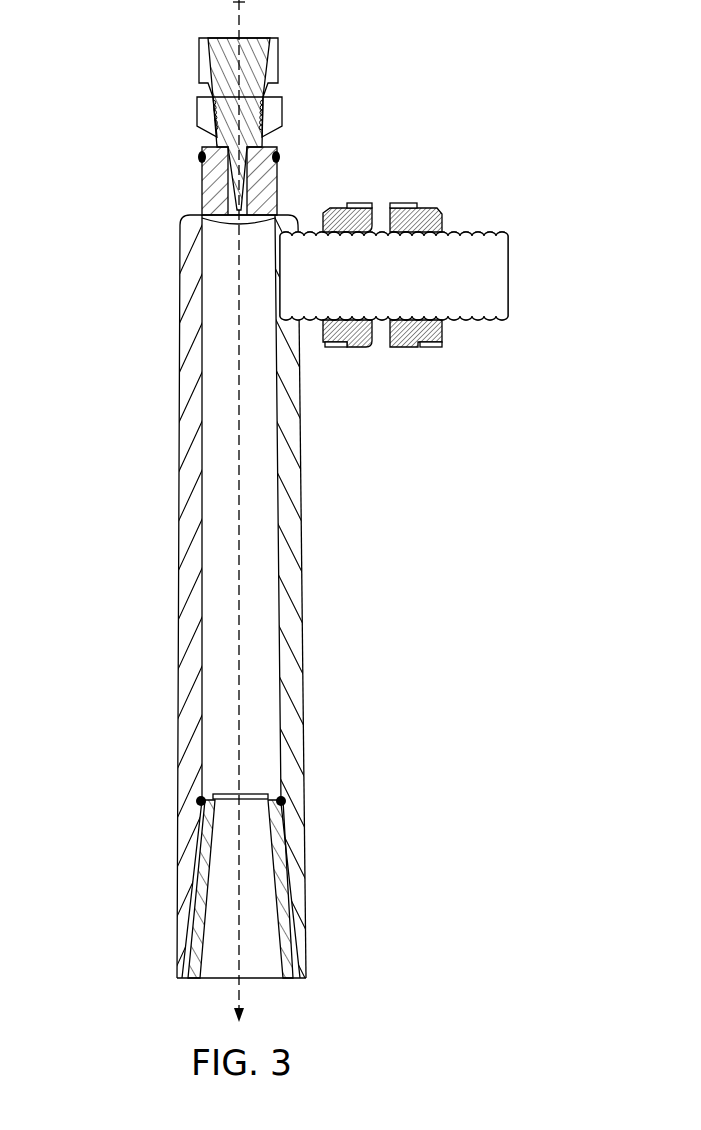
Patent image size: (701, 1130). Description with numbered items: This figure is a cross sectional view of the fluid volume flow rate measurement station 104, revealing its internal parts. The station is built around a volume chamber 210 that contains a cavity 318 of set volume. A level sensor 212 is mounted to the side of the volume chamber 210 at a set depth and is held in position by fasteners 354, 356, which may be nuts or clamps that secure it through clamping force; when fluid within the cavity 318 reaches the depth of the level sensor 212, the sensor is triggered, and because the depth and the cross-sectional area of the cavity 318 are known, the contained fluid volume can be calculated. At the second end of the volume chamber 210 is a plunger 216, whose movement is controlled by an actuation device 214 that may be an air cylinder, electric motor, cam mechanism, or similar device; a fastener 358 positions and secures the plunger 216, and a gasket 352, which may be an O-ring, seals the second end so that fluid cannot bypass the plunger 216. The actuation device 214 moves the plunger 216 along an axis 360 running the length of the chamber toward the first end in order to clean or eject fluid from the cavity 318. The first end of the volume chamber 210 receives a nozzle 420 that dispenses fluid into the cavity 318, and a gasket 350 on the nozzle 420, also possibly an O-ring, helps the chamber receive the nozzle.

The fluid volume flow rate measurement station 104 is at (100, 75).
The volume chamber 210 is at (178, 862).
The level sensor 212 is at (493, 232).
The actuation device 214 is at (278, 60).
The plunger 216 is at (202, 183).
The cavity 318 is at (272, 703).
The gasket 350 is at (296, 799).
The gasket 352 is at (188, 150).
The fastener 354 is at (426, 360).
The fastener 356 is at (364, 360).
The fastener 358 is at (293, 113).
The axis 360 is at (238, 480).
The nozzle 420 is at (300, 897).